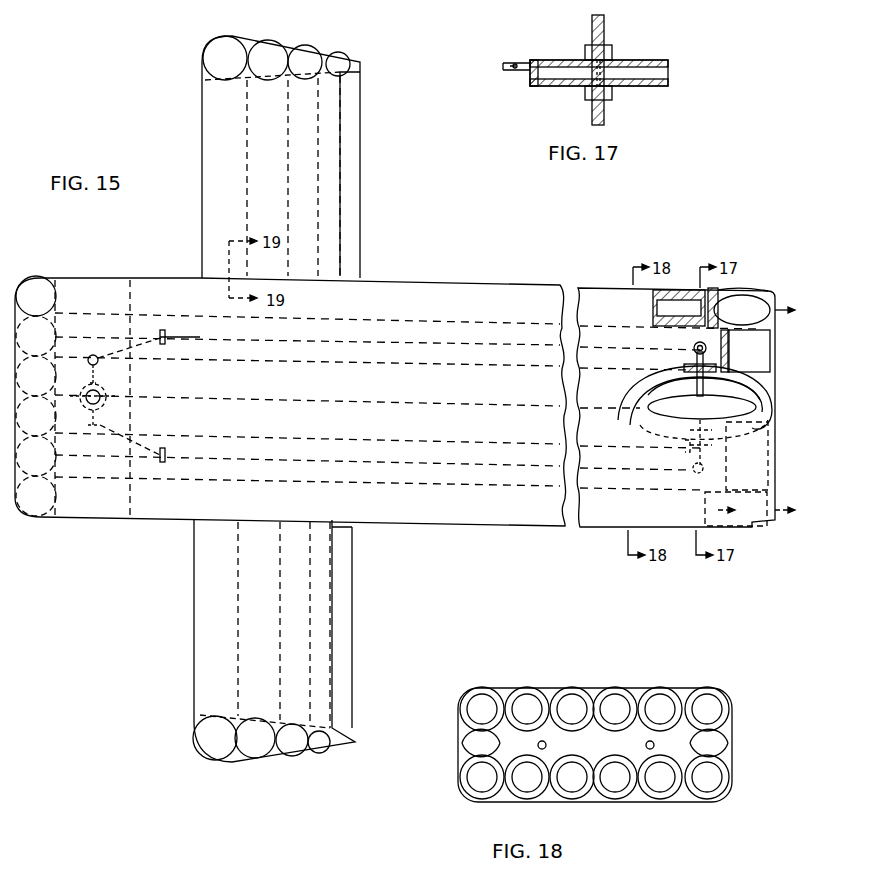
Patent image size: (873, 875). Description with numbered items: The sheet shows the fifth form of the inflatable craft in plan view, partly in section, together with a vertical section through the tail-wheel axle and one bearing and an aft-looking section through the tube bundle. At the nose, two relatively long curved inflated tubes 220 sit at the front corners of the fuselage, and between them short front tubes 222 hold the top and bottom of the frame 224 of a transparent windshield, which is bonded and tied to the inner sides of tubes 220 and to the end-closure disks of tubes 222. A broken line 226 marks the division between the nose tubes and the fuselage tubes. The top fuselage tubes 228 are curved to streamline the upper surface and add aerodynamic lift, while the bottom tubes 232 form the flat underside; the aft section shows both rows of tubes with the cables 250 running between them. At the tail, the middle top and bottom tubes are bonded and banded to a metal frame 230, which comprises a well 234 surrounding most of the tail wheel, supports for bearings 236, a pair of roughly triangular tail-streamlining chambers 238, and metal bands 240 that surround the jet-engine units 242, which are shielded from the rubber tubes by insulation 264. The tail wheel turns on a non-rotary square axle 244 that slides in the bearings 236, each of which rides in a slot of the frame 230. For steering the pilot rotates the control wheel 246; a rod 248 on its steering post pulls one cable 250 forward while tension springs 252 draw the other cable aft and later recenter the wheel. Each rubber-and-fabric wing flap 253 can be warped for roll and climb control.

In FIG. 15, the front corner tubes 220 is at (36, 396).
In FIG. 15, the front tubes 222 is at (70, 456).
In FIG. 15, the windshield frame 224 is at (10, 525).
In FIG. 15, the line of division 226 is at (132, 292).
In FIG. 15, the top fuselage tubes 228 is at (372, 400).
In FIG. 18, the top fuselage tubes 228 is at (690, 698).
In FIG. 15, the metal frame 230 is at (777, 347).
In FIG. 18, the bottom tubes 232 is at (580, 800).
In FIG. 15, the tail-wheel well 234 is at (760, 410).
In FIG. 15, the bearings 236 is at (686, 384).
In FIG. 17, the bearings 236 is at (612, 52).
In FIG. 15, the tail-streamlining chambers 238 is at (745, 351).
In FIG. 15, the metal bands 240 is at (742, 288).
In FIG. 15, the jet-engine units 242 is at (752, 300).
In FIG. 15, the axle 244 is at (704, 390).
In FIG. 17, the axle 244 is at (648, 86).
In FIG. 15, the control wheel 246 is at (100, 408).
In FIG. 15, the rod 248 is at (98, 364).
In FIG. 15, the cables 250 is at (279, 336).
In FIG. 18, the cables 250 is at (646, 745).
In FIG. 15, the tension springs 252 is at (692, 340).
In FIG. 15, the wing flap 253 is at (355, 580).
In FIG. 15, the insulation 264 is at (706, 312).